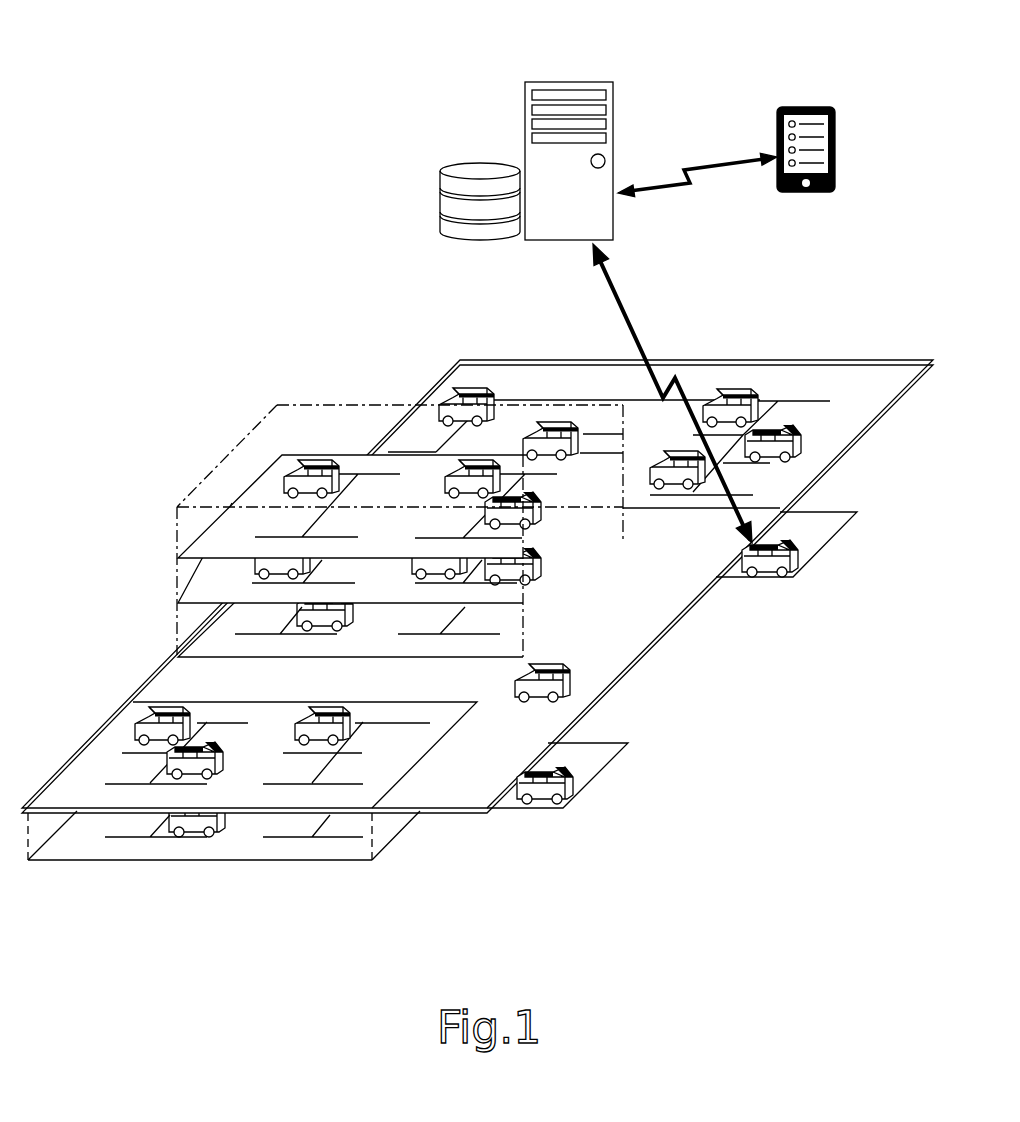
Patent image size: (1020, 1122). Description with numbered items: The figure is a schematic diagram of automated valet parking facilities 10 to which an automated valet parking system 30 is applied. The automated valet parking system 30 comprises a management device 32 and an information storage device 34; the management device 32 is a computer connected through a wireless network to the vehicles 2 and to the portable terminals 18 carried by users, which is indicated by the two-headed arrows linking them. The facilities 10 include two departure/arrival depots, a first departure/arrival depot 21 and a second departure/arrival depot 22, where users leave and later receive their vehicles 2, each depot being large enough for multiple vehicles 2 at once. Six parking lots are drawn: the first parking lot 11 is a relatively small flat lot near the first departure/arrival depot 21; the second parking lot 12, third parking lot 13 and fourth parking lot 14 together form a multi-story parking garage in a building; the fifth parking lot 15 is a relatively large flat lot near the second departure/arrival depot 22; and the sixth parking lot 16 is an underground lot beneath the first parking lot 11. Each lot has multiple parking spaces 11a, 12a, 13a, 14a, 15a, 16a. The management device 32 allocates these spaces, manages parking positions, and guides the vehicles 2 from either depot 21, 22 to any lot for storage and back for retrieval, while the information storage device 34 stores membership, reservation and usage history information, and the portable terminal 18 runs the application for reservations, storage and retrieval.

The vehicle 2 is at (800, 560).
The automated valet parking facilities 10 is at (476, 603).
The first parking lot 11 is at (261, 773).
The parking space 11a is at (366, 778).
The second parking lot 12 is at (400, 617).
The parking space 12a is at (243, 621).
The third parking lot 13 is at (417, 577).
The parking space 13a is at (257, 578).
The fourth parking lot 14 is at (433, 538).
The parking space 14a is at (268, 525).
The fifth parking lot 15 is at (629, 401).
The parking space 15a is at (806, 413).
The sixth parking lot 16 is at (220, 856).
The parking space 16a is at (290, 823).
The portable terminal 18 is at (777, 130).
The first departure/arrival depot 21 is at (600, 756).
The second departure/arrival depot 22 is at (830, 522).
The automated valet parking system 30 is at (516, 128).
The management device 32 is at (560, 82).
The information storage device 34 is at (478, 162).